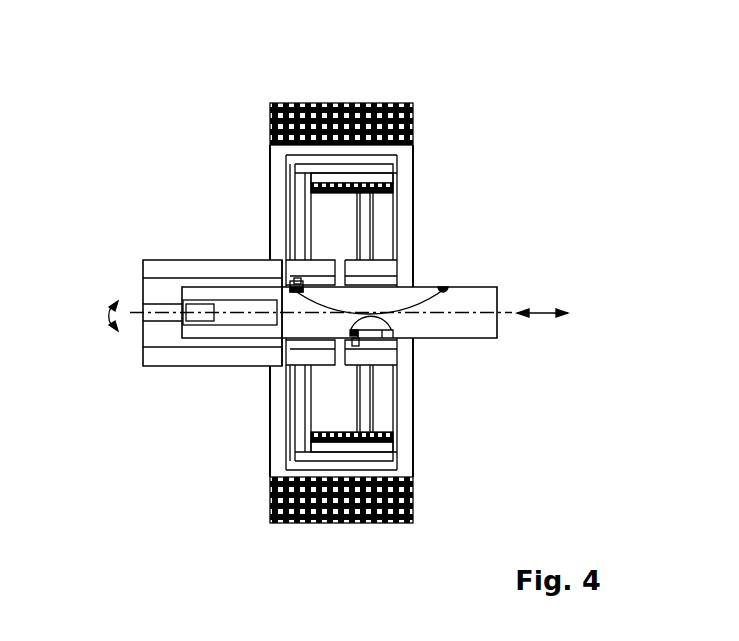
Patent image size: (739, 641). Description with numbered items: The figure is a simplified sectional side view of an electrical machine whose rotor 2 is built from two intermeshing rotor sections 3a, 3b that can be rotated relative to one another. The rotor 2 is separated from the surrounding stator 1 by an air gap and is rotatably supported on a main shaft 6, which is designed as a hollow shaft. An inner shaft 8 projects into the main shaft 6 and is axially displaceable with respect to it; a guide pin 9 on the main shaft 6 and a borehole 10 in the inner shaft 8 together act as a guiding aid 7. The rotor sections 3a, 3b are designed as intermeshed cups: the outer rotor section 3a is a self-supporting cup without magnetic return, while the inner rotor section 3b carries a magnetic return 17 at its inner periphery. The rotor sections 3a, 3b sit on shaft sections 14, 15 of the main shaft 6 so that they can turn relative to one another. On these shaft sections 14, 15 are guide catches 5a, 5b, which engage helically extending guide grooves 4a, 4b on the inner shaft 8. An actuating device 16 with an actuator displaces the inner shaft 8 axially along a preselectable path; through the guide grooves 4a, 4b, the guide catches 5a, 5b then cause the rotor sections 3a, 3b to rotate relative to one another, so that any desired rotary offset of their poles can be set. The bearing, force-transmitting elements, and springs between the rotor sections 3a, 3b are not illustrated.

The stator 1 is at (412, 100).
The rotor 2 is at (395, 223).
The outer rotor section 3a is at (287, 180).
The inner rotor section 3b is at (396, 175).
The guide groove 4a is at (288, 286).
The guide groove 4b is at (447, 288).
The guide catch 5a is at (292, 282).
The guide catch 5b is at (367, 348).
The main shaft 6 is at (167, 360).
The guiding aid 7 is at (165, 326).
The inner shaft 8 is at (483, 338).
The guide pin 9 is at (143, 320).
The borehole 10 is at (236, 318).
The shaft section 14 is at (303, 360).
The shaft section 15 is at (360, 360).
The actuating device 16 is at (520, 291).
The magnetic return 17 is at (395, 187).